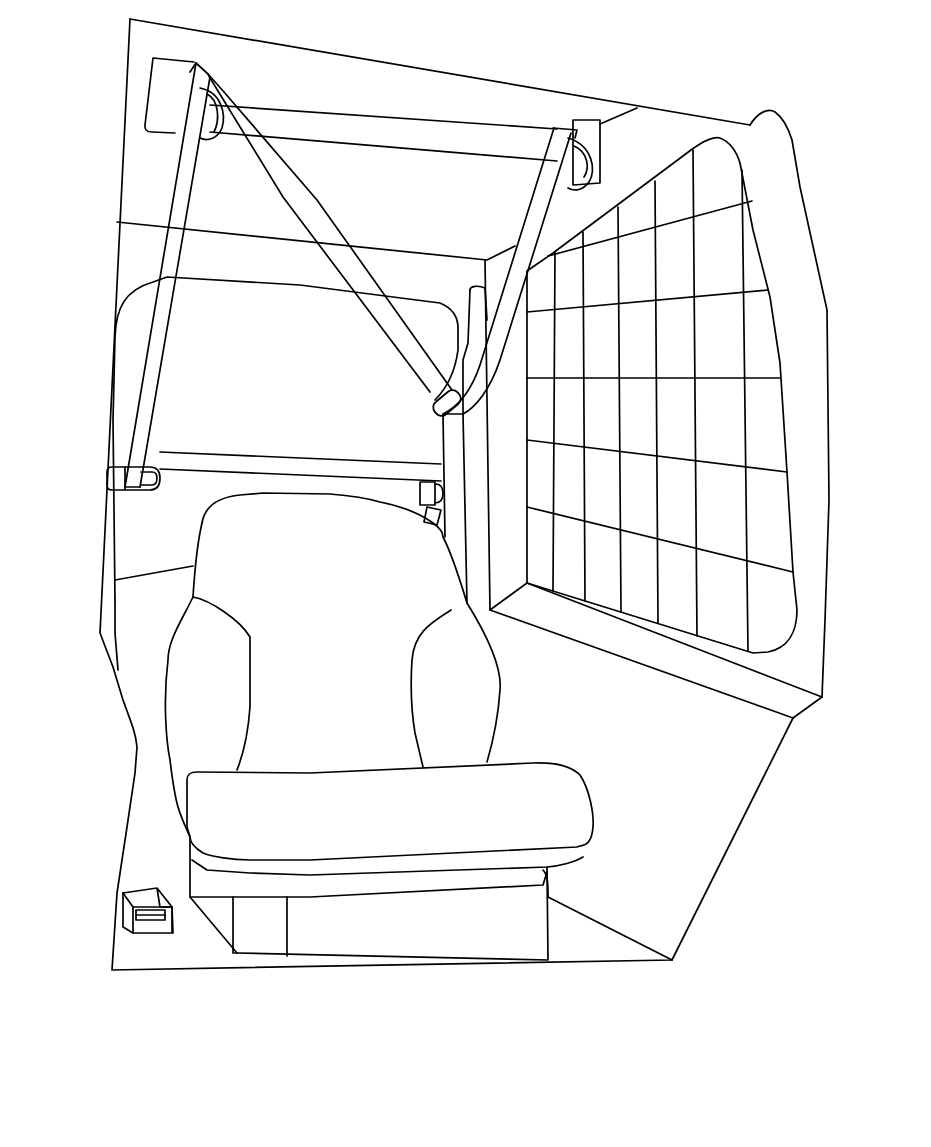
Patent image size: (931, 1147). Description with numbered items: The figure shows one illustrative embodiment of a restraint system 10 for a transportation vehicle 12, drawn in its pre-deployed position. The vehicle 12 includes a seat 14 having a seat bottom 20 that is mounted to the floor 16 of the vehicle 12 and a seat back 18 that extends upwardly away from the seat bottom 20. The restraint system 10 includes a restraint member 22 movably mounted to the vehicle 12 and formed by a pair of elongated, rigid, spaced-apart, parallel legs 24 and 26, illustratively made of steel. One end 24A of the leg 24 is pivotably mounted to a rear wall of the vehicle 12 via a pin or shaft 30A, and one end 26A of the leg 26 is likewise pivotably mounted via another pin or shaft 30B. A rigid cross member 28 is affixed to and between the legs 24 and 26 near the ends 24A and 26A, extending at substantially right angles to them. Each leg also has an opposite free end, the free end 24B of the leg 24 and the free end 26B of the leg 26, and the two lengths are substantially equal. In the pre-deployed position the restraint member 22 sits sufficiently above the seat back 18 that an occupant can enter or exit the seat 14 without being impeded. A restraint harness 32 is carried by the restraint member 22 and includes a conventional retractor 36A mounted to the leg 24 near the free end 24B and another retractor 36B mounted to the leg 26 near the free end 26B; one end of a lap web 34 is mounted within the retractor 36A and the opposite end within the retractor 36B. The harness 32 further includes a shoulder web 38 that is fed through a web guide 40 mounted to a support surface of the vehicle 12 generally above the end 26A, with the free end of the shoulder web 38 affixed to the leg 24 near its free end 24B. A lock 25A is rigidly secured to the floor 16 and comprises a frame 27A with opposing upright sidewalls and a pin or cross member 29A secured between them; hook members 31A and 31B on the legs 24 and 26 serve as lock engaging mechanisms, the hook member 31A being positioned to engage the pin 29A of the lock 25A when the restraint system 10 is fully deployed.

The restraint system 10 is at (143, 154).
The transportation vehicle 12 is at (755, 812).
The seat 14 is at (430, 726).
The floor 16 is at (566, 948).
The seat back 18 is at (329, 655).
The seat bottom 20 is at (372, 821).
The restraint member 22 is at (357, 303).
The leg 24 is at (165, 312).
The end of leg 24A is at (125, 489).
The free end of leg 24B is at (205, 70).
The lock 25A is at (150, 945).
The leg 26 is at (514, 256).
The end of leg 26A is at (435, 522).
The free end of leg 26B is at (568, 126).
The frame 27A is at (177, 917).
The cross member 28 is at (296, 458).
The pin or cross member 29A is at (143, 910).
The pin or shaft 30A is at (148, 468).
The pin or shaft 30B is at (430, 480).
The hook member 31A is at (210, 140).
The hook member 31B is at (597, 163).
The restraint harness 32 is at (262, 76).
The lap web 34 is at (377, 116).
The retractor 36A is at (150, 86).
The retractor 36B is at (608, 120).
The shoulder web 38 is at (305, 180).
The web guide 40 is at (434, 410).